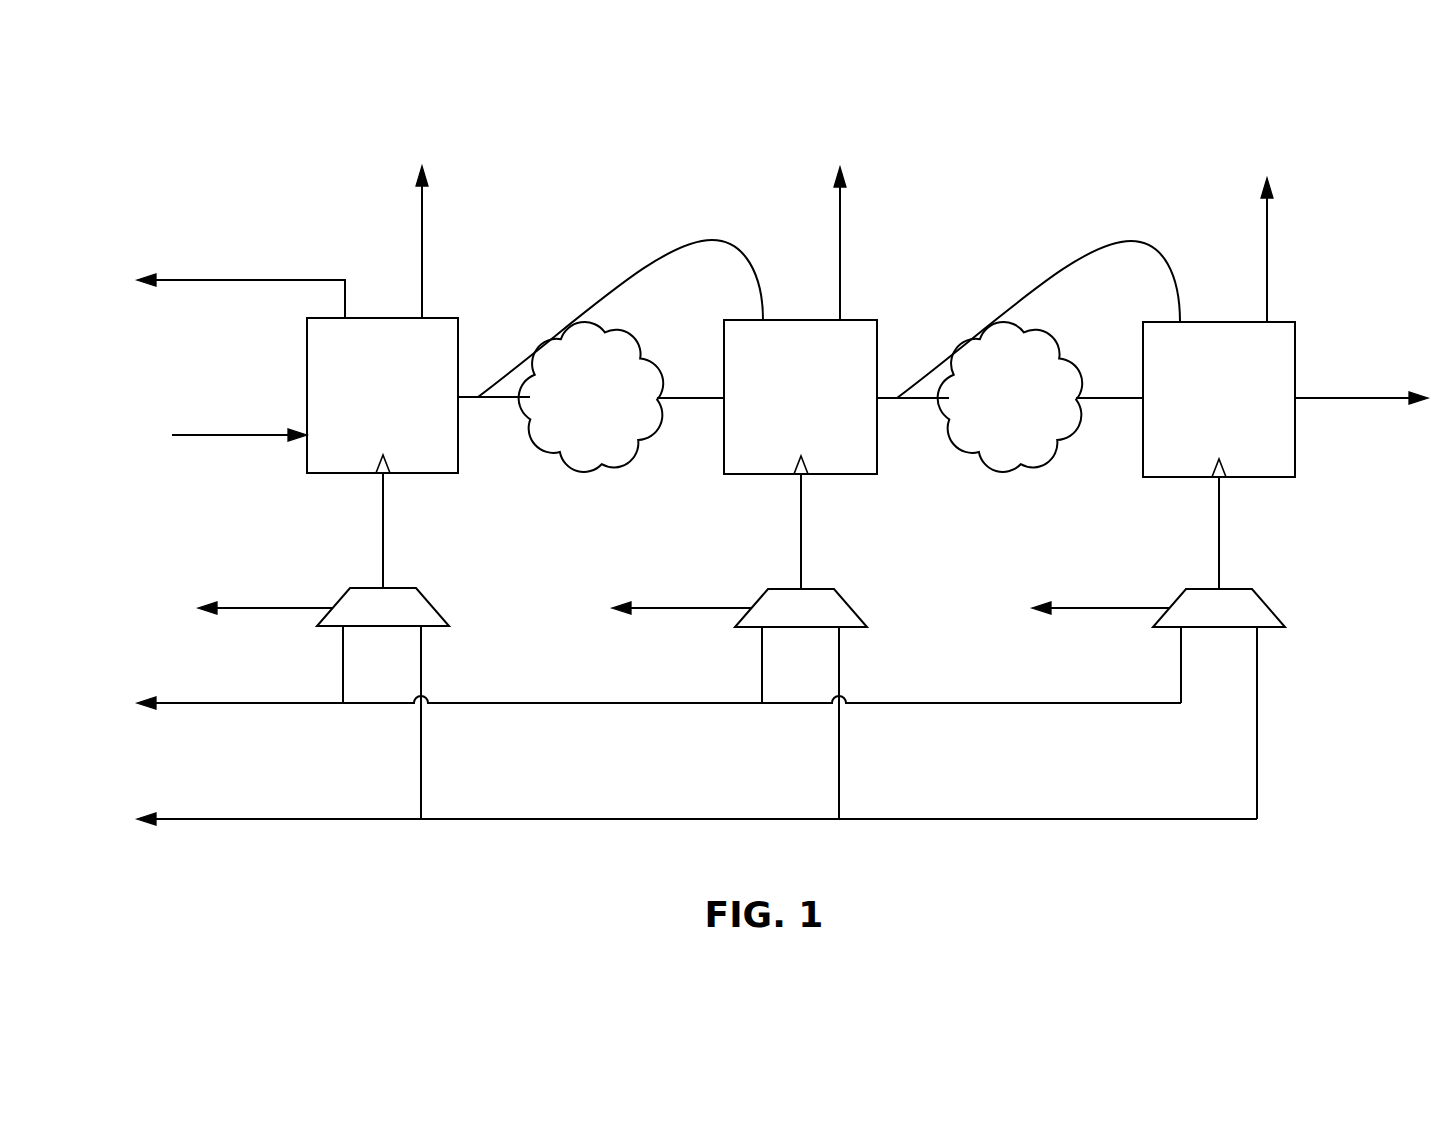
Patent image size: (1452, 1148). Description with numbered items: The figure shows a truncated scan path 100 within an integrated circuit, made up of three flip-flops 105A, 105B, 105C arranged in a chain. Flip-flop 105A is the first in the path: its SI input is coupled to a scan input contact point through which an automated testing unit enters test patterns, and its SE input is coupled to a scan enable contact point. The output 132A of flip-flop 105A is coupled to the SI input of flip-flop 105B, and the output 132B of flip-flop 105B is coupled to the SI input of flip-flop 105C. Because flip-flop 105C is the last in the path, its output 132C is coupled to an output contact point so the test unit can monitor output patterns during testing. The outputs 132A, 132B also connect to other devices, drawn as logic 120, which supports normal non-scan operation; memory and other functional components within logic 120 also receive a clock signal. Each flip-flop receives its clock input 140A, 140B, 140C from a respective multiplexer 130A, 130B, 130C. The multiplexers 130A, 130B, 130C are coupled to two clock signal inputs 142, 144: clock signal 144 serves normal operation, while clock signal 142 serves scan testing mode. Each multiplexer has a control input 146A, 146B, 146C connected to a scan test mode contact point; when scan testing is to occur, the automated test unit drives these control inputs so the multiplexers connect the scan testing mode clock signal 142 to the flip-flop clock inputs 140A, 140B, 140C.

The scan chain circuit 100 is at (1429, 89).
The flip-flop 105A is at (458, 318).
The flip-flop 105B is at (877, 320).
The flip-flop 105C is at (1295, 322).
The logic 120 is at (648, 338).
The output 132A is at (493, 398).
The output 132B is at (912, 398).
The output 132C is at (1358, 398).
The clock input 140A is at (383, 530).
The clock input 140B is at (801, 530).
The clock input 140C is at (1219, 530).
The multiplexer 130A is at (404, 588).
The multiplexer 130B is at (823, 589).
The multiplexer 130C is at (1241, 589).
The control input 146A is at (204, 608).
The control input 146B is at (668, 608).
The control input 146C is at (1102, 608).
The clock signal input 142 is at (283, 705).
The clock signal input 144 is at (212, 819).